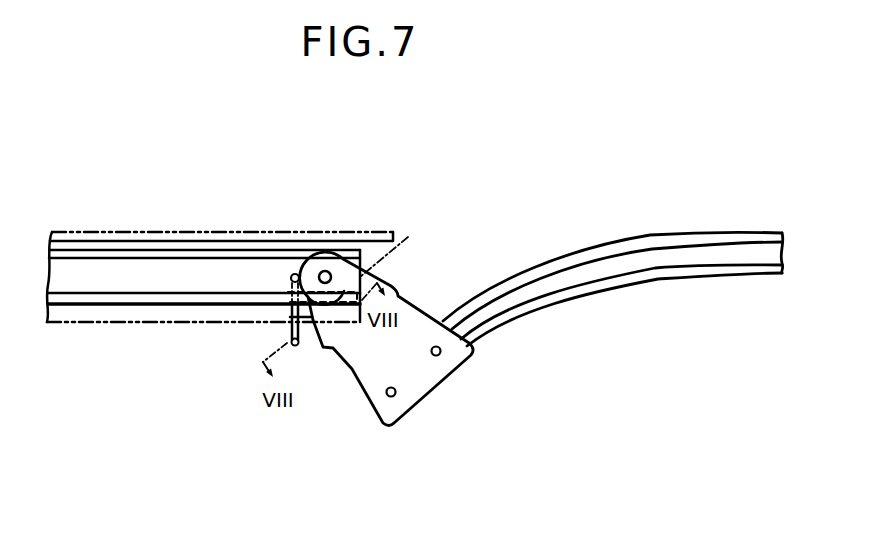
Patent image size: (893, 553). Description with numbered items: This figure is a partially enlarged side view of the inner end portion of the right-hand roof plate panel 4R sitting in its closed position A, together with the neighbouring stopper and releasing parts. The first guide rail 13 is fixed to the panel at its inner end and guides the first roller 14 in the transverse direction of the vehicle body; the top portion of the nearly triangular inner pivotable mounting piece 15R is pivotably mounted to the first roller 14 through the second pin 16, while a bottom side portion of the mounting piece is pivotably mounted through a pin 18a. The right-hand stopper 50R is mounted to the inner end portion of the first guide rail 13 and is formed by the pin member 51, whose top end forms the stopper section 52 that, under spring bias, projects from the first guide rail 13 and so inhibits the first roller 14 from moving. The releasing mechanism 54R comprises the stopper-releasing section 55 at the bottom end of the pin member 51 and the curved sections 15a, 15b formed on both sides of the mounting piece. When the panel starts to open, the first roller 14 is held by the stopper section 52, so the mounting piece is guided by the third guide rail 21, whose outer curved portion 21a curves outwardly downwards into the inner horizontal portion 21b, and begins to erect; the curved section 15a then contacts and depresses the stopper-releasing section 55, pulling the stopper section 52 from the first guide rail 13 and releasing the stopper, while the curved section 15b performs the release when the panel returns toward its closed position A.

The closed position A is at (83, 222).
The first guide rail 13 is at (138, 247).
The right-hand roof plate panel 4R is at (225, 232).
The pin member 51 is at (270, 312).
The right-hand stopper 50R is at (280, 286).
The stopper-releasing section 55 is at (291, 345).
The stopper section 52 is at (295, 272).
The second pin 16 is at (330, 270).
The inner pivotable mounting piece 15R is at (363, 386).
The curved section 15a is at (320, 349).
The curved section 15b is at (373, 273).
The first roller 14 is at (398, 244).
The pin 18a is at (441, 353).
The releasing mechanism 54R is at (303, 360).
The third guide rail 21 is at (602, 265).
The curved portion 21a is at (460, 300).
The horizontal portion 21b is at (698, 277).